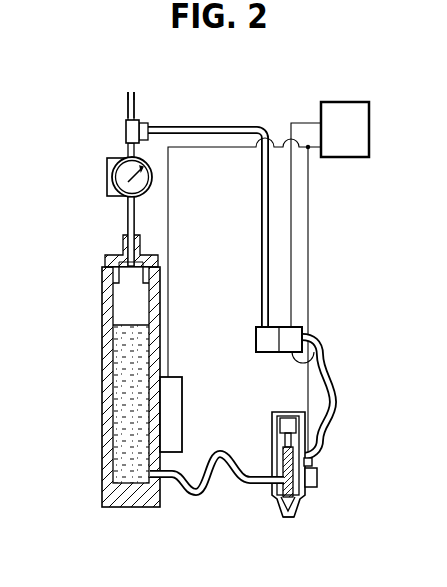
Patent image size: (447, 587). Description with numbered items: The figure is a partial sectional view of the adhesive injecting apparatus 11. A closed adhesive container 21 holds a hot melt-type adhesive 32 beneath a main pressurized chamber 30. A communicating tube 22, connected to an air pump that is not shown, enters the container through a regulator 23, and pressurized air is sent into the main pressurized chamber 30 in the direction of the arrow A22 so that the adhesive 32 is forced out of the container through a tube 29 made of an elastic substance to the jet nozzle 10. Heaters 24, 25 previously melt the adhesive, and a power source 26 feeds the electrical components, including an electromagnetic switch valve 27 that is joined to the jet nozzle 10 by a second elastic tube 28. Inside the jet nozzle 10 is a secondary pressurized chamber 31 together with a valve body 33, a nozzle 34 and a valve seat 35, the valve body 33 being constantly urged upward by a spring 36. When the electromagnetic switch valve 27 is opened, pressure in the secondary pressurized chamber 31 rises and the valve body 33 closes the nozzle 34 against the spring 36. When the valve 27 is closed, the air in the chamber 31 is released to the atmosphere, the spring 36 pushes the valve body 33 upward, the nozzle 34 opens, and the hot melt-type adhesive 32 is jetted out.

The jet nozzle 10 is at (275, 495).
The adhesive injecting apparatus 11 is at (95, 104).
The closed adhesive container 21 is at (104, 337).
The communicating tube 22 is at (127, 150).
The arrow indicating pressurized air flow A22 is at (130, 84).
The regulator 23 is at (107, 185).
The heater 24 is at (183, 404).
The heater 25 is at (318, 479).
The power source 26 is at (349, 158).
The electromagnetic switch valve 27 is at (307, 346).
The tube made of elastic substance 28 is at (330, 382).
The tube made of elastic substance 29 is at (222, 447).
The main pressurized chamber 30 is at (118, 297).
The secondary pressurized chamber 31 is at (287, 423).
The hot melt-type adhesive 32 is at (112, 380).
The valve body 33 is at (304, 491).
The nozzle 34 is at (290, 502).
The valve seat 35 is at (299, 500).
The spring 36 is at (312, 459).